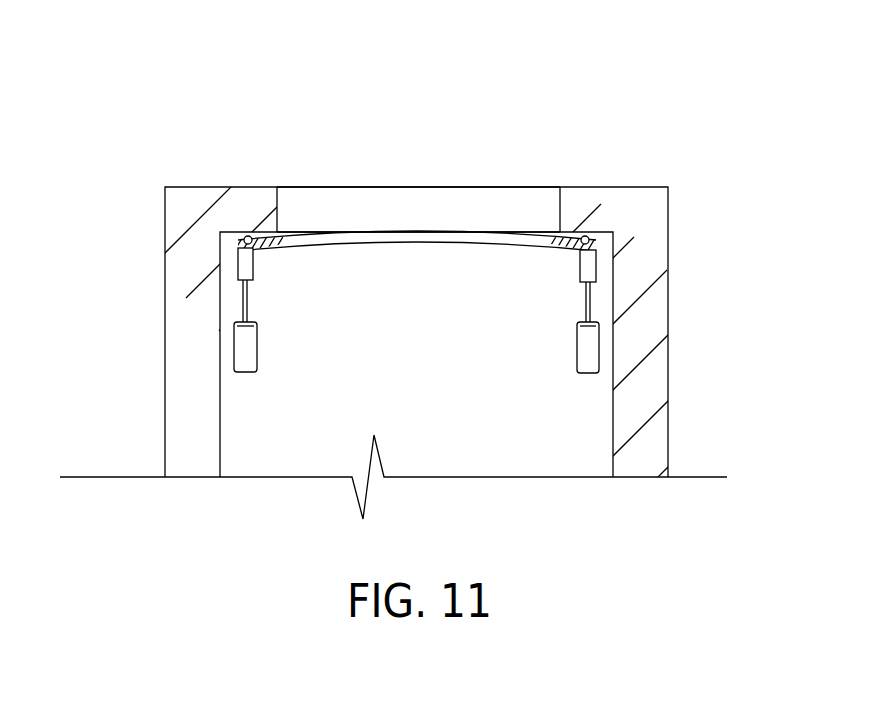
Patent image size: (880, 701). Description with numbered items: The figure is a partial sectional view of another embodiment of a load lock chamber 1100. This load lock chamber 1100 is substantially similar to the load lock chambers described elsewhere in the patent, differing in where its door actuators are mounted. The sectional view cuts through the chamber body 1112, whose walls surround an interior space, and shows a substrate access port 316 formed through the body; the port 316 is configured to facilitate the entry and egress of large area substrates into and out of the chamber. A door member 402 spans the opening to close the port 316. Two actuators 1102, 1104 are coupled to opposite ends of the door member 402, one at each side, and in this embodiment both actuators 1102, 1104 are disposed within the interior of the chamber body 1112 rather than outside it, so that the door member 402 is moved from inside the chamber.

The load lock chamber 1100 is at (150, 273).
The chamber body 1112 is at (232, 205).
The substrate access port 316 is at (415, 203).
The door member 402 is at (412, 238).
The actuator 1102 is at (245, 352).
The actuator 1104 is at (586, 352).